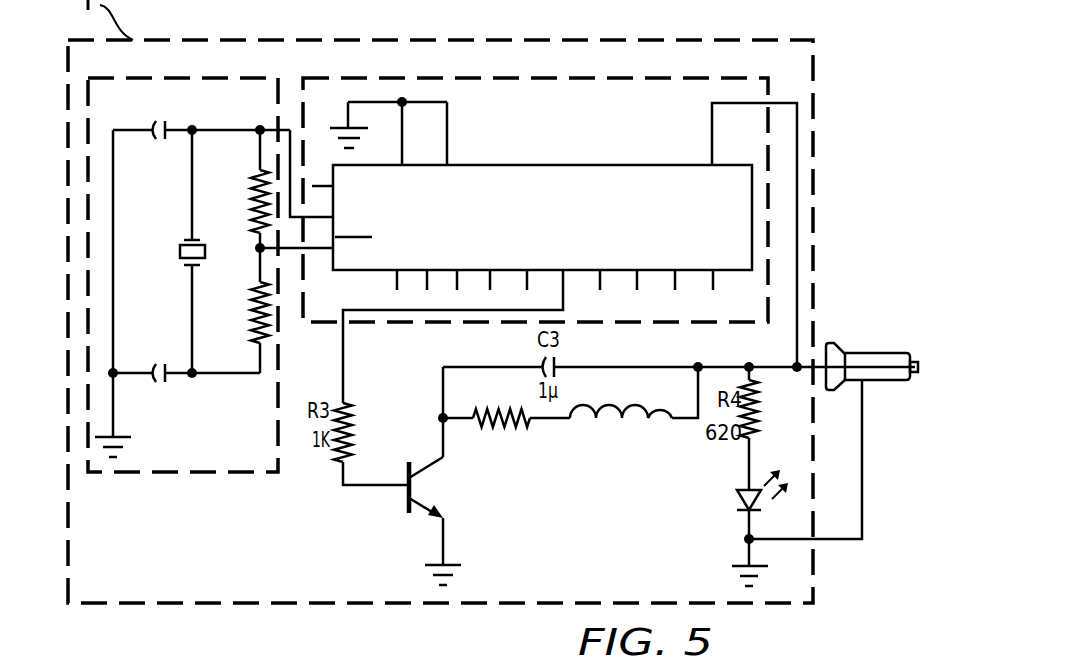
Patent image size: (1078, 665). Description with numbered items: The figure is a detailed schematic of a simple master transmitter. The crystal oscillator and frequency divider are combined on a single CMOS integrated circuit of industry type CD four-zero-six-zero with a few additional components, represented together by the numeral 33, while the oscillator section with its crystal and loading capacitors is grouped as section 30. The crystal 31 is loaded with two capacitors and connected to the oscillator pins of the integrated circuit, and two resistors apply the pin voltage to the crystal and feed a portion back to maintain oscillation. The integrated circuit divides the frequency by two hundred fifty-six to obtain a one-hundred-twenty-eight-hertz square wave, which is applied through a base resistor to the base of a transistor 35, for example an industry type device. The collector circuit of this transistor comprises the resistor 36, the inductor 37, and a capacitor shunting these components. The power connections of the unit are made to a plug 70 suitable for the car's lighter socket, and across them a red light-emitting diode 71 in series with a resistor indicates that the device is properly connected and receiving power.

The crystal oscillator circuit 30 is at (158, 78).
The crystal 31 is at (182, 244).
The crystal oscillator and frequency divider 33 is at (361, 78).
The transistor 35 is at (422, 463).
The resistor 36 is at (523, 411).
The inductor 37 is at (652, 406).
The plug 70 is at (903, 352).
The red light-emitting diode 71 is at (741, 490).